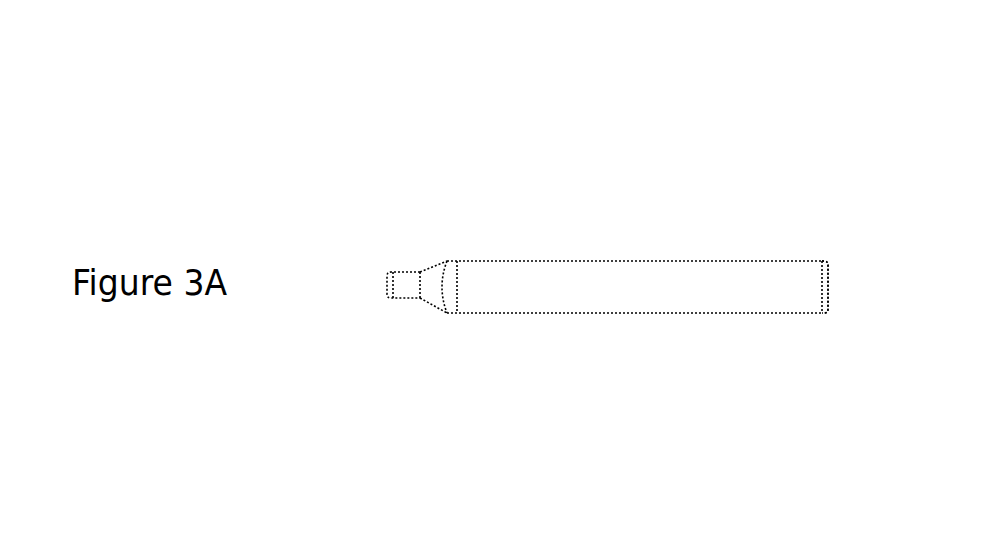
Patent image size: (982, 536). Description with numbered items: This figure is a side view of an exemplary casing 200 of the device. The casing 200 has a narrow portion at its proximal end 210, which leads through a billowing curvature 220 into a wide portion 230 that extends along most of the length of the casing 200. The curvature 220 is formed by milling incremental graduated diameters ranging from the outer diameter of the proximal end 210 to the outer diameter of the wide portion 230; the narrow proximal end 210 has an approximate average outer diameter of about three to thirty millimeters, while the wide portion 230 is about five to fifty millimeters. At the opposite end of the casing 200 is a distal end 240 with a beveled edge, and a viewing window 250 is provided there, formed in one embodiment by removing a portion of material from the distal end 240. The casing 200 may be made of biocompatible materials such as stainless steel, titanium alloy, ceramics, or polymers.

The casing 200 is at (363, 185).
The proximal end 210 is at (386, 301).
The billowing curvature 220 is at (425, 312).
The wide portion 230 is at (613, 323).
The distal end 240 is at (827, 323).
The viewing window 250 is at (822, 261).